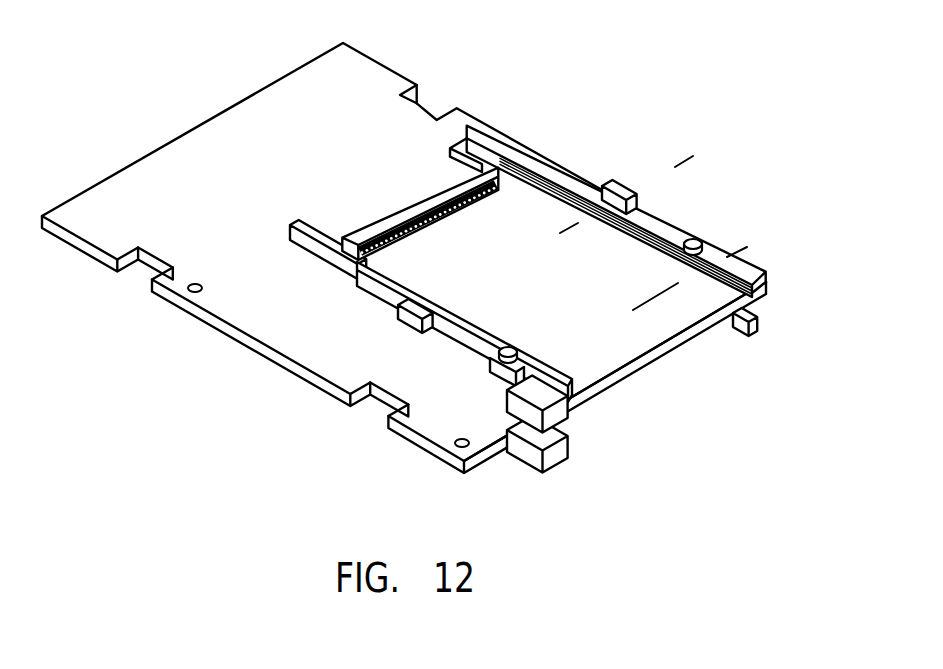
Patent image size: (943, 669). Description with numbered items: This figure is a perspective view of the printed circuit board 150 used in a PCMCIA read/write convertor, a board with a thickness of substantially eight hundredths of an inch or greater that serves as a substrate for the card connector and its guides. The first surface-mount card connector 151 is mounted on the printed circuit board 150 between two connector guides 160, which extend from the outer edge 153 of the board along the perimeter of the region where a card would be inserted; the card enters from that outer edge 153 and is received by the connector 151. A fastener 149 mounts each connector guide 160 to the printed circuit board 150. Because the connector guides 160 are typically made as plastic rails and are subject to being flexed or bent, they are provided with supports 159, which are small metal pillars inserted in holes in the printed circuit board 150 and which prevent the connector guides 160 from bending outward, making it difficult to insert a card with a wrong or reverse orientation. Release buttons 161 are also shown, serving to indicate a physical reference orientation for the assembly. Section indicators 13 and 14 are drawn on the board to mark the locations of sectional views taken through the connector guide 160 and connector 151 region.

The printed circuit board 150 is at (218, 143).
The first surface-mount card connector 151 is at (413, 205).
The outer edge 153 is at (682, 346).
The supports 159 is at (417, 302).
The connector guides 160 is at (455, 318).
The fastener 149 is at (514, 346).
The release buttons 161 is at (562, 415).
The section line 13 is at (697, 168).
The section line 14 is at (752, 260).